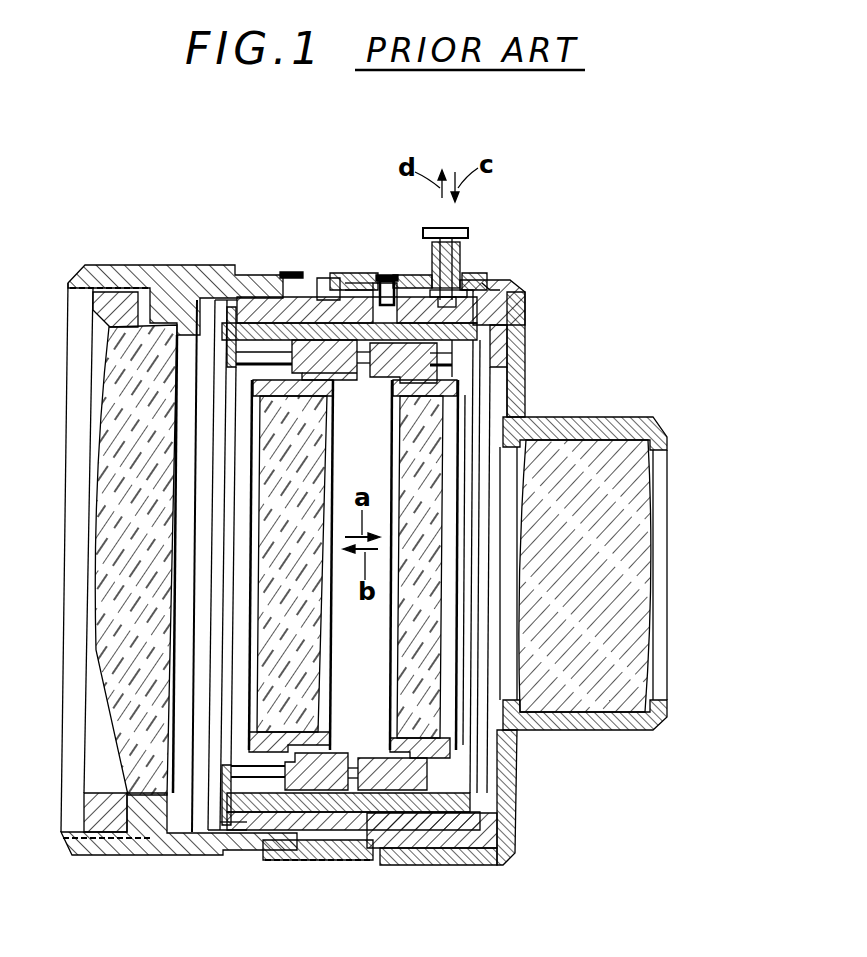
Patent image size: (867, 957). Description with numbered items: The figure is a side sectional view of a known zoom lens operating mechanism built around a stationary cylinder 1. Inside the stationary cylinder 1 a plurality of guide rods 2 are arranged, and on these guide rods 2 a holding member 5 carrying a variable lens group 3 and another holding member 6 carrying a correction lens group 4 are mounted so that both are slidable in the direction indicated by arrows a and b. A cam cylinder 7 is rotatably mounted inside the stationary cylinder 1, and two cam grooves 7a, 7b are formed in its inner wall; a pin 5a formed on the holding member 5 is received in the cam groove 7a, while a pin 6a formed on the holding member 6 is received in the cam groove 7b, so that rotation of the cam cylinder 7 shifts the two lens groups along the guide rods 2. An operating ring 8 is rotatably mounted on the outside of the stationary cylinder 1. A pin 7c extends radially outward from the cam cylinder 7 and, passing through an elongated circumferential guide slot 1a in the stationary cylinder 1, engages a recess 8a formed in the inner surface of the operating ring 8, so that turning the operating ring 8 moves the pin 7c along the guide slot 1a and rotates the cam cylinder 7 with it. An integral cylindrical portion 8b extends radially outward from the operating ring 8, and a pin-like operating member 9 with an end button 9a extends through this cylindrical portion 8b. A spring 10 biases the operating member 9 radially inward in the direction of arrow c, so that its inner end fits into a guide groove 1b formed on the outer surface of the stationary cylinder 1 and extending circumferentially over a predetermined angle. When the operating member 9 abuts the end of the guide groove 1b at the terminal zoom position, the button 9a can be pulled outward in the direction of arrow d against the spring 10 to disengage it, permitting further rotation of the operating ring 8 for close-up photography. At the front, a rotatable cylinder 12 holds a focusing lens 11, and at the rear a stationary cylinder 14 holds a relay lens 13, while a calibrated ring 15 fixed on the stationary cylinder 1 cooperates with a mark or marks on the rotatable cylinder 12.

The stationary cylinder 1 is at (503, 307).
The elongated circumferential guide slot 1a is at (372, 283).
The guide groove 1b is at (488, 287).
The guide rods 2 is at (263, 350).
The variable lens group 3 is at (308, 637).
The correction lens group 4 is at (410, 610).
The holding member 5 is at (333, 394).
The pin 5a is at (310, 372).
The holding member 6 is at (397, 372).
The pin 6a is at (445, 372).
The cam cylinder 7 is at (297, 297).
The cam groove 7a is at (333, 298).
The cam groove 7b is at (473, 324).
The pin 7c is at (372, 290).
The operating ring 8 is at (417, 276).
The recess 8a is at (392, 276).
The cylindrical portion 8b is at (460, 250).
The operating member 9 is at (440, 250).
The end button 9a is at (457, 230).
The spring 10 is at (456, 264).
The focusing lens 11 is at (98, 524).
The rotatable cylinder 12 is at (103, 268).
The relay lens 13 is at (645, 575).
The stationary cylinder 14 is at (603, 423).
The calibrated ring 15 is at (297, 866).